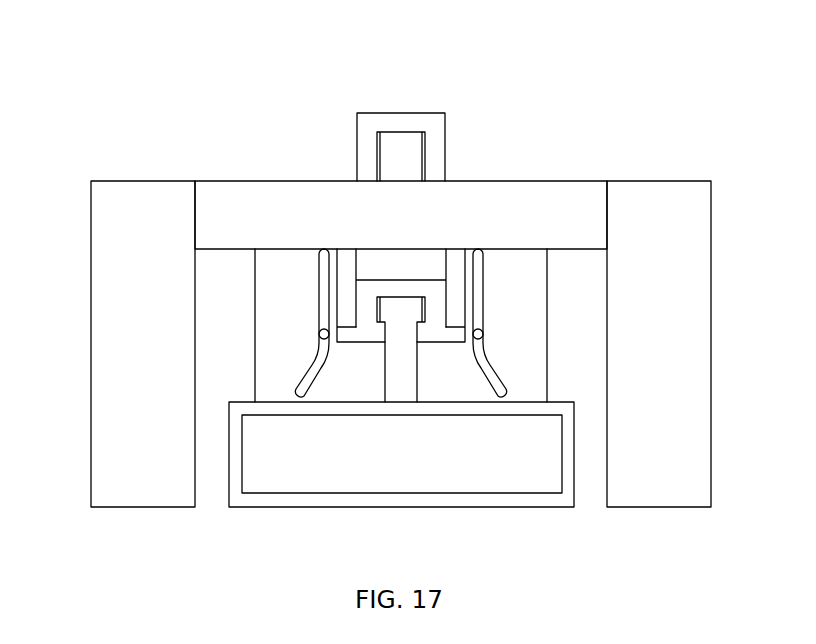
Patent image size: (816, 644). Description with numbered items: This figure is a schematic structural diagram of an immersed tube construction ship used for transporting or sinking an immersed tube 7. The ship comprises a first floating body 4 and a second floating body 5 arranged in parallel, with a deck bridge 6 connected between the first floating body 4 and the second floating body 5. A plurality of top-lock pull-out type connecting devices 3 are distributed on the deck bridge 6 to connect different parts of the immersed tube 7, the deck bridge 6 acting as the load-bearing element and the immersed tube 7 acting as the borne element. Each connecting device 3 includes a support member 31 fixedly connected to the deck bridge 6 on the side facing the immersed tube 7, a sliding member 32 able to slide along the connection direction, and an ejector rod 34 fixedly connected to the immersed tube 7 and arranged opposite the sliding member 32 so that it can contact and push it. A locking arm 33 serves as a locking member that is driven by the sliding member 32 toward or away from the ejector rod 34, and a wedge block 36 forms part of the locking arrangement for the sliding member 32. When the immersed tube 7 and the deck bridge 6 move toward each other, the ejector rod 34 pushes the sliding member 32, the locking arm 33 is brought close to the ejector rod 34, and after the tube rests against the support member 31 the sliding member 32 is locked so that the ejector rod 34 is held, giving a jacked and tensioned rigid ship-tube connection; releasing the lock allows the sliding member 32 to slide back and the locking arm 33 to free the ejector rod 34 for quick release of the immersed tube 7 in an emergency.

The top-lock pull-out type connecting device 3 is at (202, 162).
The support member 31 is at (287, 265).
The sliding member 32 is at (382, 262).
The locking arm 33 is at (365, 333).
The ejector rod 34 is at (388, 317).
The wedge block 36 is at (400, 147).
The first floating body 4 is at (123, 297).
The second floating body 5 is at (690, 302).
The deck bridge 6 is at (533, 208).
The immersed tube 7 is at (542, 500).